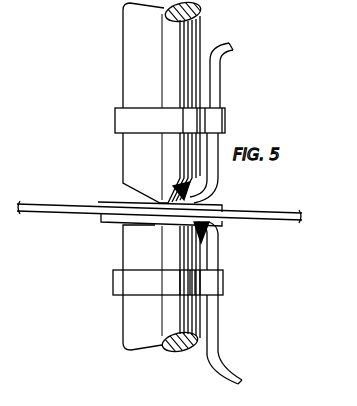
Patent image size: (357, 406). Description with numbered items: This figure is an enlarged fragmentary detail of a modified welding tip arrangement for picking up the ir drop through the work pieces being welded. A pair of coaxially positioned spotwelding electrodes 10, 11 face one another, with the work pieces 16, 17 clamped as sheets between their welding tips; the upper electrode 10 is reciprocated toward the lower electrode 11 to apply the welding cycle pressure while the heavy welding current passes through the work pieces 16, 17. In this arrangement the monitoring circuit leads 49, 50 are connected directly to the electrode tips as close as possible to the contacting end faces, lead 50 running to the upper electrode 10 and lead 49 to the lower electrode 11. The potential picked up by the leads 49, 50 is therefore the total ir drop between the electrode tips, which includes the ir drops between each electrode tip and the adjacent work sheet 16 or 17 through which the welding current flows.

The upper spotwelding electrode 10 is at (132, 53).
The lower spotwelding electrode 11 is at (130, 307).
The work piece 16 is at (72, 203).
The work piece 17 is at (262, 220).
The monitoring circuit lead 49 is at (241, 381).
The monitoring circuit lead 50 is at (236, 44).